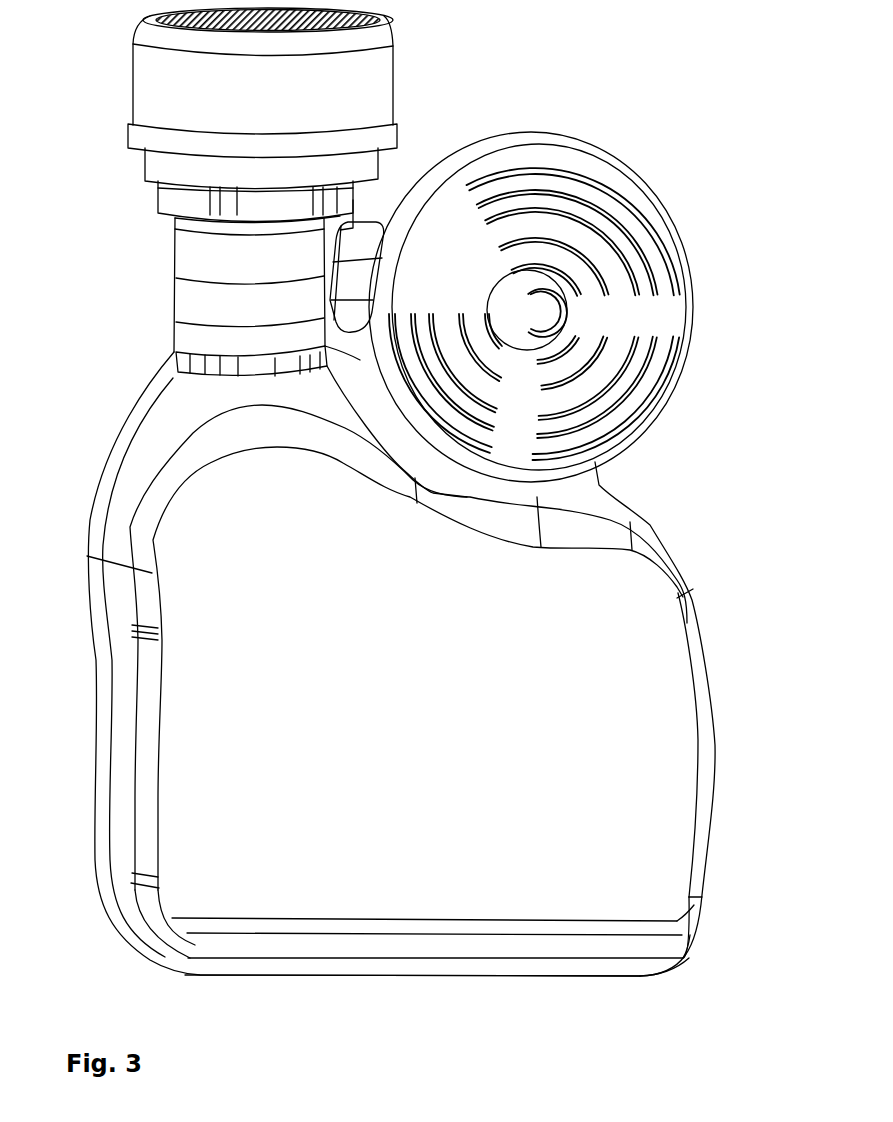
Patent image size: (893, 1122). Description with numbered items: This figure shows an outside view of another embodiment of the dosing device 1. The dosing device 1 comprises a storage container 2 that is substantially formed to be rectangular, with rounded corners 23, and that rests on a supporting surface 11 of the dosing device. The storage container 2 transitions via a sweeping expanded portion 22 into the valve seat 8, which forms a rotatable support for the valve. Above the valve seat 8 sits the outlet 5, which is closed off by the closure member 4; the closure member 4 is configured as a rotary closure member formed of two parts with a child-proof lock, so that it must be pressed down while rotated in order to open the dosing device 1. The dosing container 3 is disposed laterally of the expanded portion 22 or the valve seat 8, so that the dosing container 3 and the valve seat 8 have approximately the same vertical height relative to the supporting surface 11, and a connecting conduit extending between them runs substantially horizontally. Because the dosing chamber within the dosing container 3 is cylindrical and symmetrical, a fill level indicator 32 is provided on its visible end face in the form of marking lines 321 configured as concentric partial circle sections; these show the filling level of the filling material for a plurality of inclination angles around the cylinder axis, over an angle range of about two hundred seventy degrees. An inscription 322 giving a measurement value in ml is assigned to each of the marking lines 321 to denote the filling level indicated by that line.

The dosing device 1 is at (510, 109).
The storage container 2 is at (133, 765).
The dosing container 3 is at (643, 198).
The closure member 4 is at (140, 80).
The outlet 5 is at (175, 197).
The valve seat 8 is at (200, 300).
The supporting surface 11 is at (393, 963).
The expanded portion 22 is at (173, 472).
The corner 23 is at (668, 968).
The fill level indicator 32 is at (627, 417).
The marking line 321 is at (667, 247).
The inscription 322 is at (663, 317).